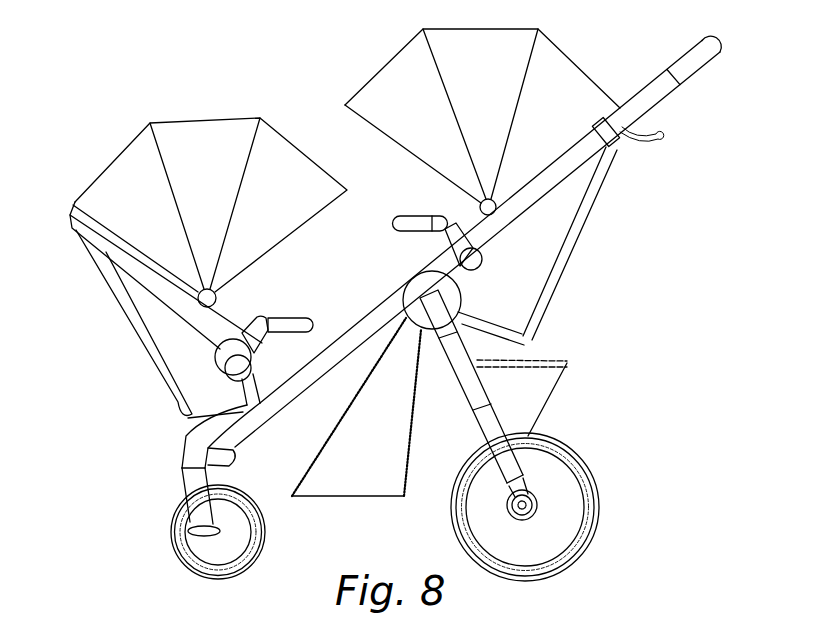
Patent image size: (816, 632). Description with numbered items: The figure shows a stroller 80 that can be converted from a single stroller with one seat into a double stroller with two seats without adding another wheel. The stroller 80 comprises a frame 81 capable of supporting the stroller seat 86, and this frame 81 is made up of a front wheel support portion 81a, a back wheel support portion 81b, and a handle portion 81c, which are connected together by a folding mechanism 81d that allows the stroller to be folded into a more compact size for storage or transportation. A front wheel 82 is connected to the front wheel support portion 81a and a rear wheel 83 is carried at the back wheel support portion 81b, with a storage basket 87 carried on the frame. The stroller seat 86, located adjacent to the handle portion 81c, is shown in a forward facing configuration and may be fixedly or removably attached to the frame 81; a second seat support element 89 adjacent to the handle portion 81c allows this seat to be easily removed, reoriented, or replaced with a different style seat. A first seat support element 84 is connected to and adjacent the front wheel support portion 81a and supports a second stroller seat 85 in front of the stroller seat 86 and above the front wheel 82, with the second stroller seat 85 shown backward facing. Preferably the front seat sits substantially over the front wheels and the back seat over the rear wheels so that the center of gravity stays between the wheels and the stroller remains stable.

The stroller 80 is at (100, 85).
The frame 81 is at (482, 336).
The front wheel support portion 81a is at (346, 342).
The back wheel support portion 81b is at (497, 403).
The handle portion 81c is at (533, 198).
The folding mechanism 81d is at (424, 272).
The front wheel 82 is at (172, 528).
The rear wheel 83 is at (597, 530).
The seat support element 84 is at (247, 393).
The second stroller seat 85 is at (203, 227).
The stroller seat 86 is at (545, 262).
The storage basket 87 is at (548, 388).
The second seat support element 89 is at (461, 292).